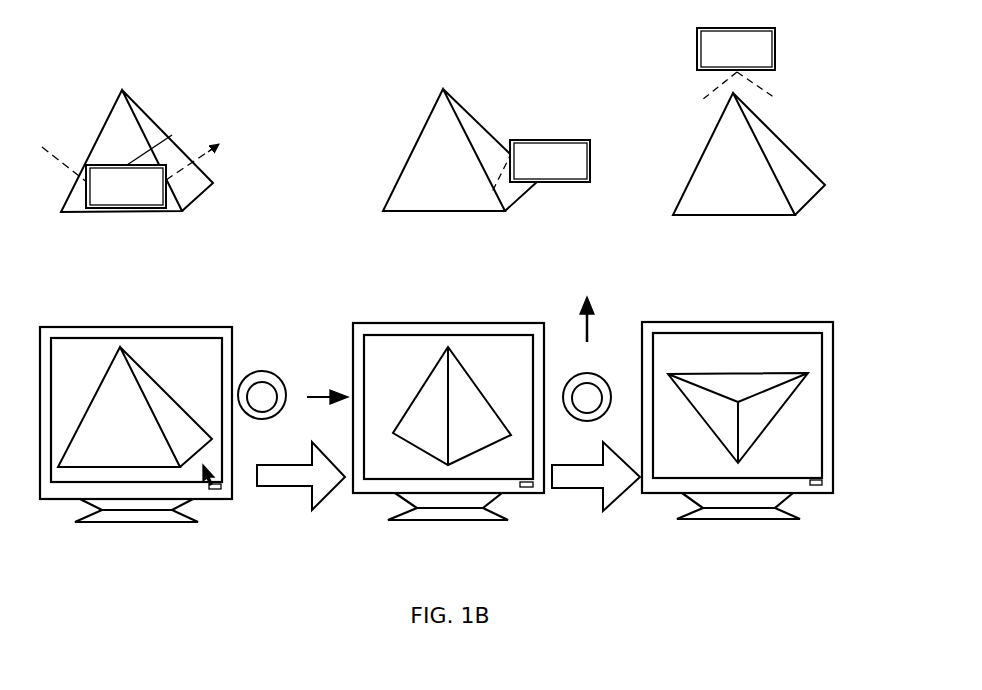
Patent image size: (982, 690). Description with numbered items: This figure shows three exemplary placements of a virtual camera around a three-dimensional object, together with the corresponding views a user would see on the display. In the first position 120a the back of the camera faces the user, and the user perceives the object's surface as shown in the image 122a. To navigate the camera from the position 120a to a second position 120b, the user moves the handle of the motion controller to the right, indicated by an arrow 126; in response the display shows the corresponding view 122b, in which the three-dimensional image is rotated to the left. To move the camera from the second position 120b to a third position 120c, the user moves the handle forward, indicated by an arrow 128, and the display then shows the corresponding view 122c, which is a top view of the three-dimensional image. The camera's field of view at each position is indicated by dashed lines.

The first camera position 120a is at (105, 56).
The second camera position 120b is at (409, 52).
The third camera position 120c is at (668, 52).
The view at first position 122a is at (222, 493).
The view at second position 122b is at (393, 465).
The view at third position 122c is at (685, 470).
The arrow 126 is at (326, 403).
The arrow 128 is at (578, 330).